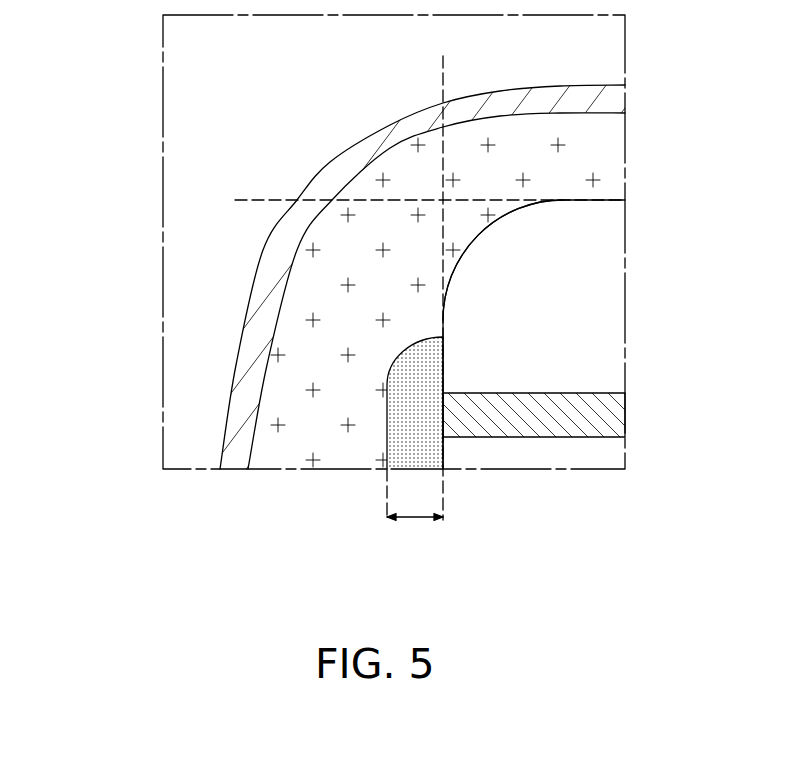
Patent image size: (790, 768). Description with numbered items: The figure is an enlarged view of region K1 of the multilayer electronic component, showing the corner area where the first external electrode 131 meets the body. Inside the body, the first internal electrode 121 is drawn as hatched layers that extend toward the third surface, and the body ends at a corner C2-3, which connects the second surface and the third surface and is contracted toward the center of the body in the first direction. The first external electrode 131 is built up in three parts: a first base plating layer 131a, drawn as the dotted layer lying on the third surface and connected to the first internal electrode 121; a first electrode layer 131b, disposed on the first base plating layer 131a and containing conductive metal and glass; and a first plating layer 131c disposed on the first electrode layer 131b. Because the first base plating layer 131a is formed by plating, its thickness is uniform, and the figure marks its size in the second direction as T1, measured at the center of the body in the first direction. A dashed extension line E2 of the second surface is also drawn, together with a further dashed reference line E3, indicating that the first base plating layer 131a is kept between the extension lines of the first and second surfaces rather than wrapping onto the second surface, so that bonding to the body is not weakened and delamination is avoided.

The first external electrode 131 is at (415, 260).
The first base plating layer 131a is at (407, 387).
The first electrode layer 131b is at (283, 423).
The first plating layer 131c is at (238, 443).
The first internal electrode 121 is at (607, 317).
The 2-3 corner C2-3 is at (492, 235).
The extension line of the second surface E2 is at (413, 200).
The reference line E3 is at (444, 276).
The size of the first base plating layer in the second direction T1 is at (435, 491).
The region K1 is at (410, 595).